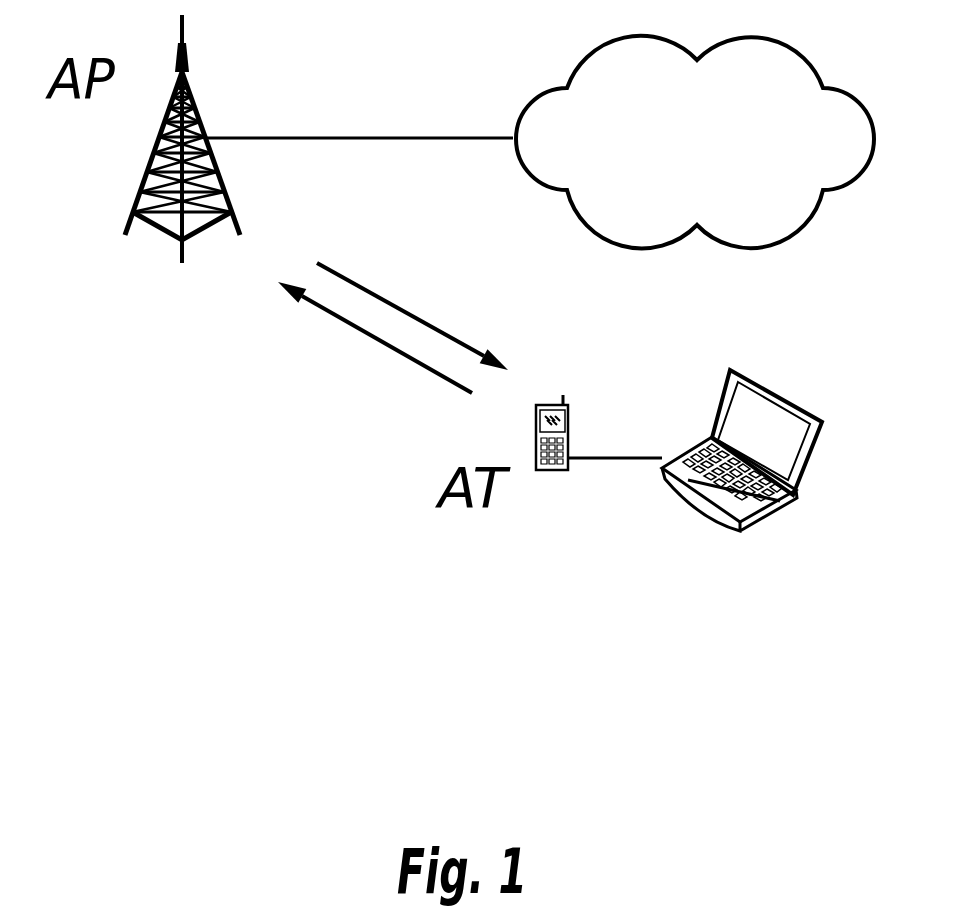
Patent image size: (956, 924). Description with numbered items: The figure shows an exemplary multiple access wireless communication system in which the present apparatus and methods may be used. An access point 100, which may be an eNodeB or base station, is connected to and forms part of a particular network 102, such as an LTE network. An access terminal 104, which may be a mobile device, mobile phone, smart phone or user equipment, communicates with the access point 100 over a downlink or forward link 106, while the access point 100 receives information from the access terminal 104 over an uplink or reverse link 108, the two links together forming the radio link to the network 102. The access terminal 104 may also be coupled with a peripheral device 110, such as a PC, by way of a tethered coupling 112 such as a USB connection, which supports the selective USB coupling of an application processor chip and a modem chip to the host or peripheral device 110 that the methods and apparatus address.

The access point 100 is at (192, 68).
The network 102 is at (733, 242).
The access terminal 104 is at (548, 405).
The forward link 106 is at (392, 302).
The reverse link 108 is at (393, 348).
The peripheral device 110 is at (728, 527).
The tethered coupling 112 is at (617, 460).